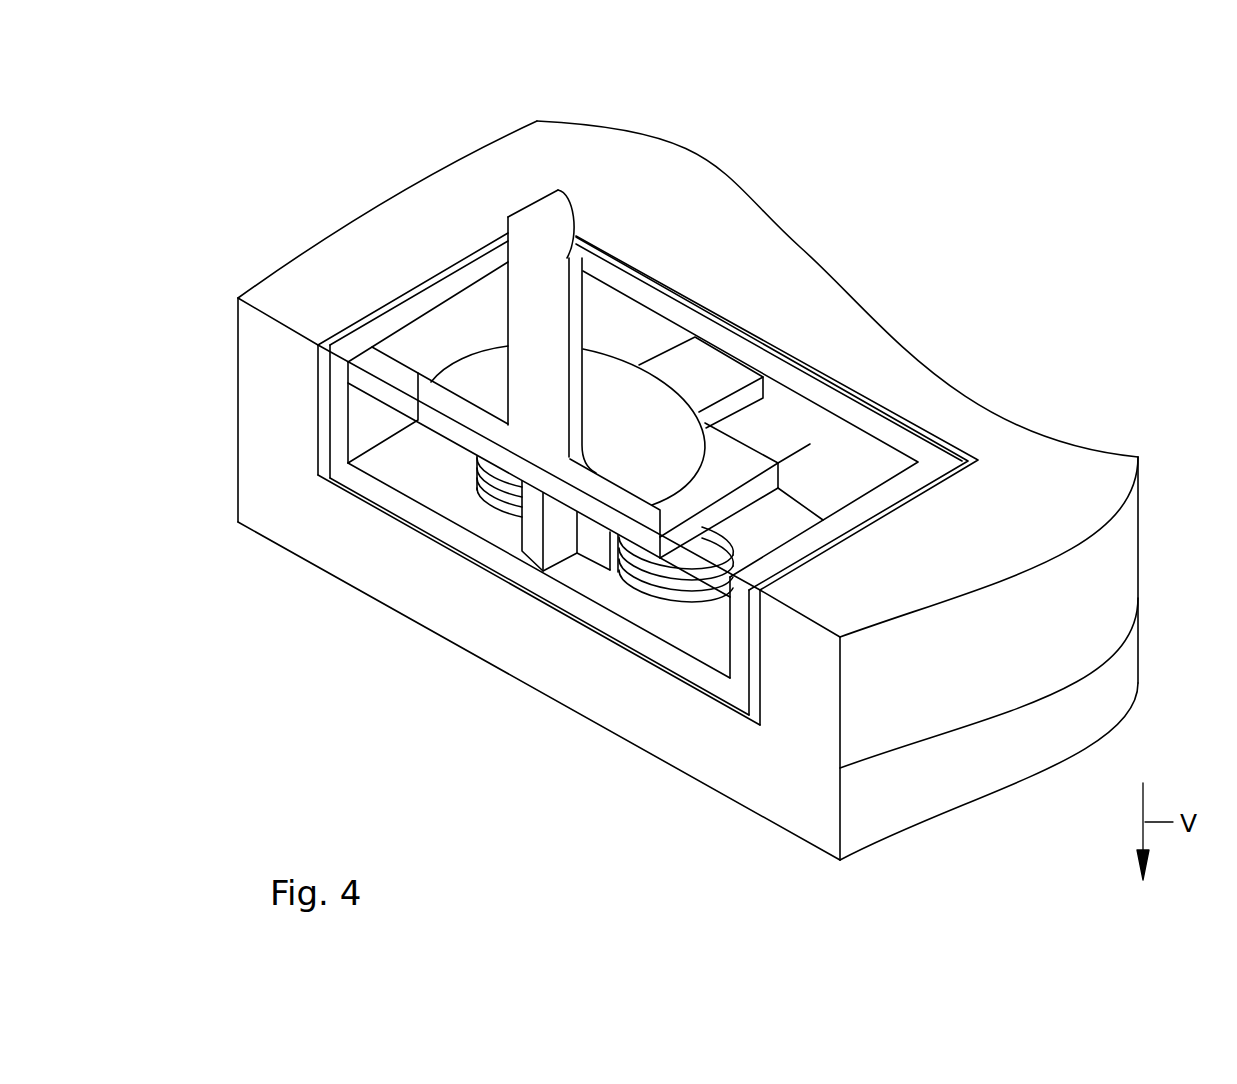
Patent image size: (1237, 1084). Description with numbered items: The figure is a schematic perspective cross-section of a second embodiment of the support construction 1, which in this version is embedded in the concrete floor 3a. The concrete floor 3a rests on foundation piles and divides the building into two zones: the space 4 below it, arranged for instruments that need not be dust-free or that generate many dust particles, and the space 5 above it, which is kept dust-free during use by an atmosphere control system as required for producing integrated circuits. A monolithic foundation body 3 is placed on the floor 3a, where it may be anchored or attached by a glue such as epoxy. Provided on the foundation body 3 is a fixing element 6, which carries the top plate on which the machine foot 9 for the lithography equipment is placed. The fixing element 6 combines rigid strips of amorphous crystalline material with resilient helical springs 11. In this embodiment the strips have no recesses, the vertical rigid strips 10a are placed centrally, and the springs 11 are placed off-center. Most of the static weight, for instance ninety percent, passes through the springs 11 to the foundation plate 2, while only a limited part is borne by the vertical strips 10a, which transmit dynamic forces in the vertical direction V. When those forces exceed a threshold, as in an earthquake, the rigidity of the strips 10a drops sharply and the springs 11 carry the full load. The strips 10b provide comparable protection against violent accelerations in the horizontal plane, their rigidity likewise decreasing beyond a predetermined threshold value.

The support construction 1 is at (736, 494).
The foundation plate 2 is at (703, 632).
The foundation body 3 is at (1110, 573).
The concrete floor 3a is at (1110, 677).
The space 4 is at (741, 866).
The space 5 is at (1031, 371).
The fixing element 6 is at (807, 483).
The machine foot 9 is at (617, 385).
The vertical rigid strips 10a is at (557, 538).
The strips 10b is at (390, 365).
The helical springs 11 is at (490, 500).